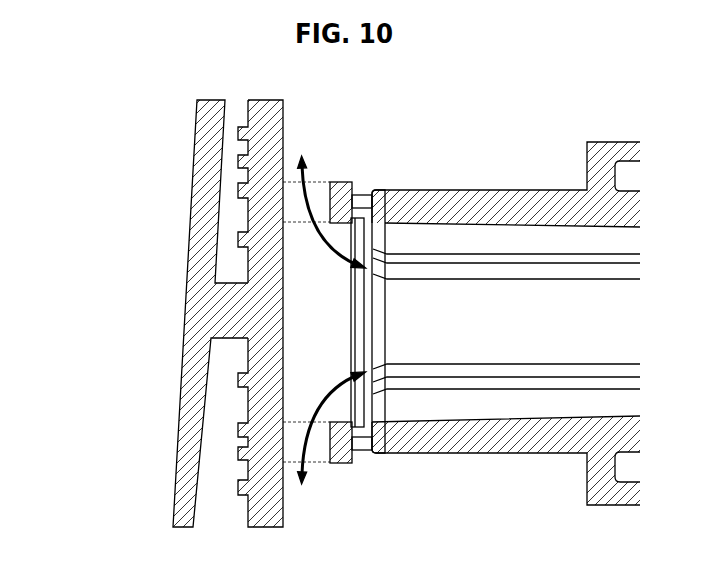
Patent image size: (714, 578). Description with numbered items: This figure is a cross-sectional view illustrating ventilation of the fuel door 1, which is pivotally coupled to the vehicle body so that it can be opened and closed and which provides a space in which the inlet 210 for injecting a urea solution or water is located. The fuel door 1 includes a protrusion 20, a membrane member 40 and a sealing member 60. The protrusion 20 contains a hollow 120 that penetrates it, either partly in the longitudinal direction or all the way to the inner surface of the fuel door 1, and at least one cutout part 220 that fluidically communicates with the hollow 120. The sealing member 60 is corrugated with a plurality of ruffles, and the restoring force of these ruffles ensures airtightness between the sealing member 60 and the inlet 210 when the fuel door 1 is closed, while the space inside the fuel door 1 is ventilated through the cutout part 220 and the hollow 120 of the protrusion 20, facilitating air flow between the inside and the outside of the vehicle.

The fuel door 1 is at (174, 292).
The hollow 120 is at (312, 376).
The cutout part 220 is at (323, 197).
The protrusion 20 is at (340, 464).
The membrane member 40 is at (357, 248).
The sealing member 60 is at (362, 450).
The inlet 210 is at (468, 190).